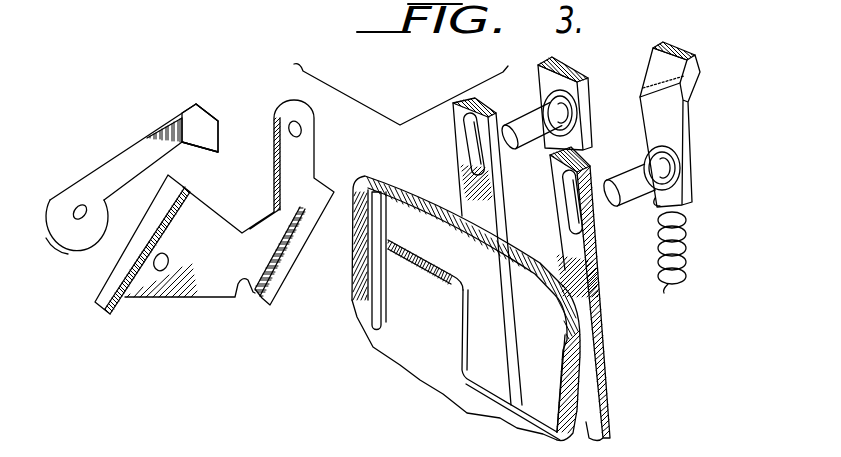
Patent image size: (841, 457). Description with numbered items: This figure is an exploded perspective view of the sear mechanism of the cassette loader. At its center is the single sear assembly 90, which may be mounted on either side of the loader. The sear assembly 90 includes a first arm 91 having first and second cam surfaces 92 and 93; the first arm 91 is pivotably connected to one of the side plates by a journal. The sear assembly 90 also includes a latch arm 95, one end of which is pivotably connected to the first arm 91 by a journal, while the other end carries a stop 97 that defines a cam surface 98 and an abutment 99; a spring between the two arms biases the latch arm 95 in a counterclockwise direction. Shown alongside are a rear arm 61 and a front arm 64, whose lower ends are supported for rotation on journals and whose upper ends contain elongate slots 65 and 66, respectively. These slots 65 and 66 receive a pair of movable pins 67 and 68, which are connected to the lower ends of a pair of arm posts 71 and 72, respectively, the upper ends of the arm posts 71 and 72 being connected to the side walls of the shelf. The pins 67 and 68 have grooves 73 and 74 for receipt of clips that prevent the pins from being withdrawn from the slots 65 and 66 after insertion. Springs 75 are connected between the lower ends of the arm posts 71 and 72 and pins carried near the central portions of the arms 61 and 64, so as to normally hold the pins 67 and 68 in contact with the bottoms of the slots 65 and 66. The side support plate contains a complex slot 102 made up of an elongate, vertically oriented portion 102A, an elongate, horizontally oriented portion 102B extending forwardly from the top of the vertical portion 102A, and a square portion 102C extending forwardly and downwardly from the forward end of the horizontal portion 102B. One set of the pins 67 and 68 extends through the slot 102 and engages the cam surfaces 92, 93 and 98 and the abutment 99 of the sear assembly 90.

The sear assembly 90 is at (188, 339).
The first arm 91 is at (187, 283).
The first cam surface 92 is at (122, 282).
The second cam surface 93 is at (280, 255).
The latch arm 95 is at (97, 180).
The stop 97 is at (193, 122).
The cam surface 98 is at (200, 152).
The abutment 99 is at (222, 123).
The rear arm 61 is at (468, 185).
The front arm 64 is at (587, 297).
The elongate slot 65 is at (467, 130).
The elongate slot 66 is at (566, 193).
The pin 67 is at (555, 122).
The pin 68 is at (640, 183).
The arm post 71 is at (561, 81).
The arm post 72 is at (670, 67).
The groove 73 is at (553, 107).
The groove 74 is at (647, 157).
The spring 75 is at (661, 248).
The complex slot 102 is at (461, 379).
The vertically oriented portion 102A is at (377, 295).
The horizontally oriented portion 102B is at (453, 238).
The square portion 102C is at (563, 365).